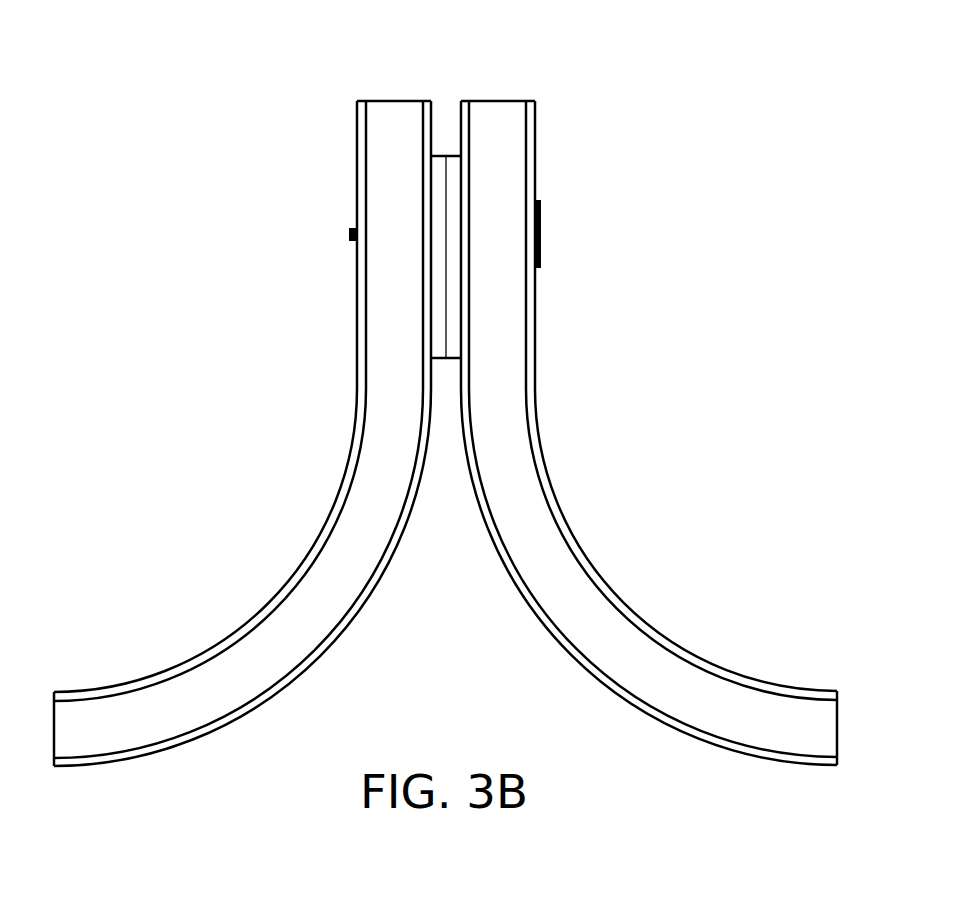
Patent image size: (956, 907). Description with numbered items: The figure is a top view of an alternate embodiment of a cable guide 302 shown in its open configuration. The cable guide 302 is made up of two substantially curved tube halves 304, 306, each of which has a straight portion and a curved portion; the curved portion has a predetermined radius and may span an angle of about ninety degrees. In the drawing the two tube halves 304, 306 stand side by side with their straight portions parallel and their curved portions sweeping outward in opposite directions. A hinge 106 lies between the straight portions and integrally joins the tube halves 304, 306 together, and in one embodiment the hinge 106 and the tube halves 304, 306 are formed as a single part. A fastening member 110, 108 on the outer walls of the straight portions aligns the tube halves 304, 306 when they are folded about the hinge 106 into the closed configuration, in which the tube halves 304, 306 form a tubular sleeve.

The cable guide 302 is at (278, 125).
The tube half 304 is at (351, 445).
The tube half 306 is at (540, 438).
The hinge 106 is at (455, 156).
The fastening member 108 is at (349, 234).
The fastening member 110 is at (541, 237).